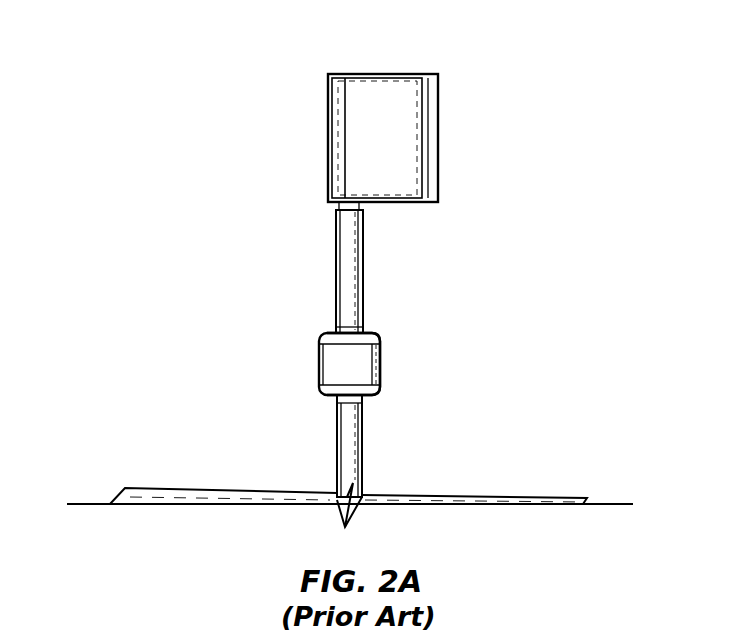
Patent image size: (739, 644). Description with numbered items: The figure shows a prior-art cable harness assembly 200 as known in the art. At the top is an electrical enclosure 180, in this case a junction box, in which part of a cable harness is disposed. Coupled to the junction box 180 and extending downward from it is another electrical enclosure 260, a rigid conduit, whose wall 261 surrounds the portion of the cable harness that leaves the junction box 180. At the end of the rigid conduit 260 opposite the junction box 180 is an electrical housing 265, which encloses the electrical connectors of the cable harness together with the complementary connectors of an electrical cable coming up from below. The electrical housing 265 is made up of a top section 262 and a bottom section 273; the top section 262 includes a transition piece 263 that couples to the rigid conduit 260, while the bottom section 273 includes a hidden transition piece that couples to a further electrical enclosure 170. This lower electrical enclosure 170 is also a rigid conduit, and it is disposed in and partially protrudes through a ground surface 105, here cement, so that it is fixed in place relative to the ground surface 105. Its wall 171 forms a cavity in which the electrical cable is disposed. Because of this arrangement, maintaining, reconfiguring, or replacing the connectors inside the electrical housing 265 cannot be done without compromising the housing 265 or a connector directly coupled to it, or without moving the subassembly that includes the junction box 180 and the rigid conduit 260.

The cable harness assembly 200 is at (122, 55).
The electrical enclosure 180 is at (409, 68).
The electrical enclosure 260 is at (333, 261).
The wall 261 is at (355, 272).
The top section 262 is at (327, 364).
The transition piece 263 is at (366, 333).
The electrical housing 265 is at (384, 362).
The bottom section 273 is at (370, 393).
The electrical enclosure 170 is at (334, 452).
The wall 171 is at (362, 466).
The ground surface 105 is at (146, 490).